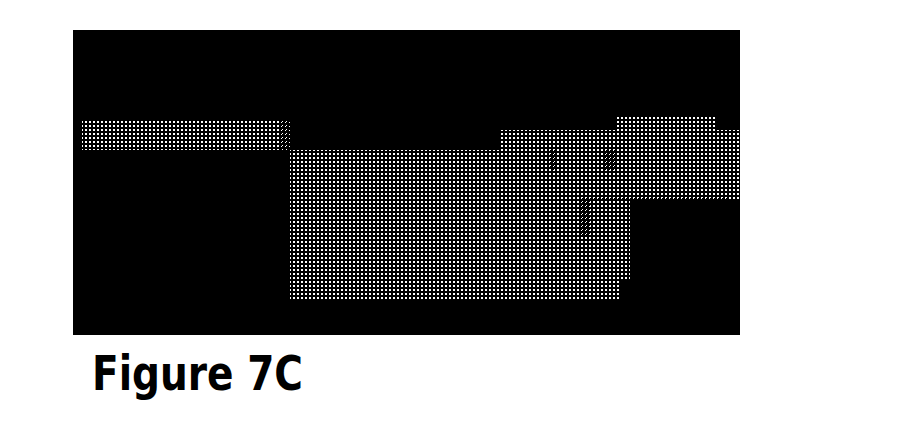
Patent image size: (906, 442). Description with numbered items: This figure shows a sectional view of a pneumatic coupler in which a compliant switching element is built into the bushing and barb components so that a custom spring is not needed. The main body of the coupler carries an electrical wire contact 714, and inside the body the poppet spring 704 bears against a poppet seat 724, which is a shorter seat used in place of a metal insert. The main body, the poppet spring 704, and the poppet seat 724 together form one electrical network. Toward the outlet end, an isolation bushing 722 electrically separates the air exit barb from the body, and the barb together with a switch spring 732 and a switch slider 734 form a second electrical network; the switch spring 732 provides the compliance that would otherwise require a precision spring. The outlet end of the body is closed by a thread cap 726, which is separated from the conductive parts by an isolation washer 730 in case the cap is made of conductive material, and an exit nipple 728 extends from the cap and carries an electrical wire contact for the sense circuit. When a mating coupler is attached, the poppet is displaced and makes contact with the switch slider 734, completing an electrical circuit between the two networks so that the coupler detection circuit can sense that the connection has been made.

The electrical wire contact 714 is at (300, 95).
The poppet spring 704 is at (440, 162).
The poppet seat 724 is at (510, 138).
The isolation bushing 722 is at (573, 145).
The thread cap 726 is at (628, 117).
The exit nipple 728 is at (664, 237).
The isolation washer 730 is at (609, 228).
The switch spring 732 is at (555, 248).
The switch slider 734 is at (495, 215).